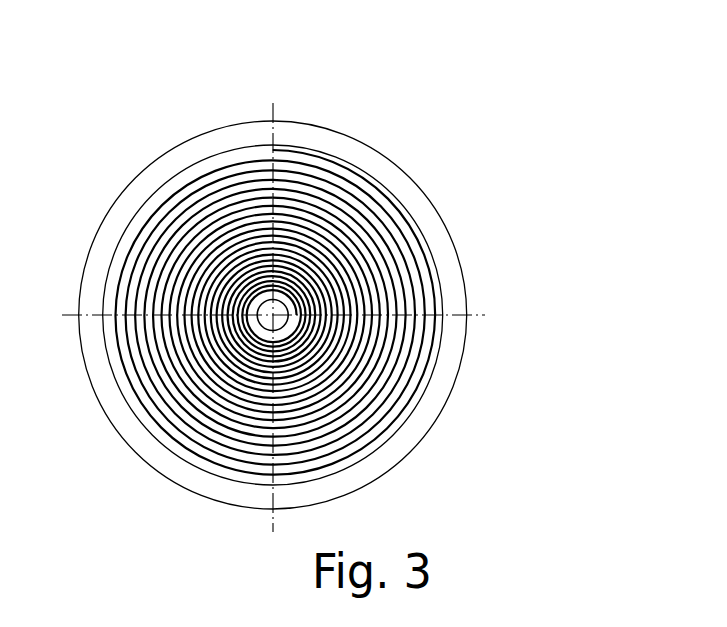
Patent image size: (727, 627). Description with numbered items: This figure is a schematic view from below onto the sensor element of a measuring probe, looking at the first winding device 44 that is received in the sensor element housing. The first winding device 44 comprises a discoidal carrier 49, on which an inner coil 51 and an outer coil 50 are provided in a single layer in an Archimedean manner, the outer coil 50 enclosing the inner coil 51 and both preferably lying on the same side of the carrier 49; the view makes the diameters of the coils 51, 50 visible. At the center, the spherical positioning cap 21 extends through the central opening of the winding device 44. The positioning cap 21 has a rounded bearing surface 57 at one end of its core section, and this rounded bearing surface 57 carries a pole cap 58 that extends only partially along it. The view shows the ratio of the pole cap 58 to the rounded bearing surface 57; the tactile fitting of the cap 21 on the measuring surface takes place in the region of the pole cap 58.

The spherical positioning cap 21 is at (284, 277).
The first winding device 44 is at (466, 293).
The discoidal carrier 49 is at (453, 338).
The outer coil 50 is at (360, 232).
The inner coil 51 is at (320, 353).
The rounded bearing surface 57 is at (257, 298).
The pole cap 58 is at (289, 313).